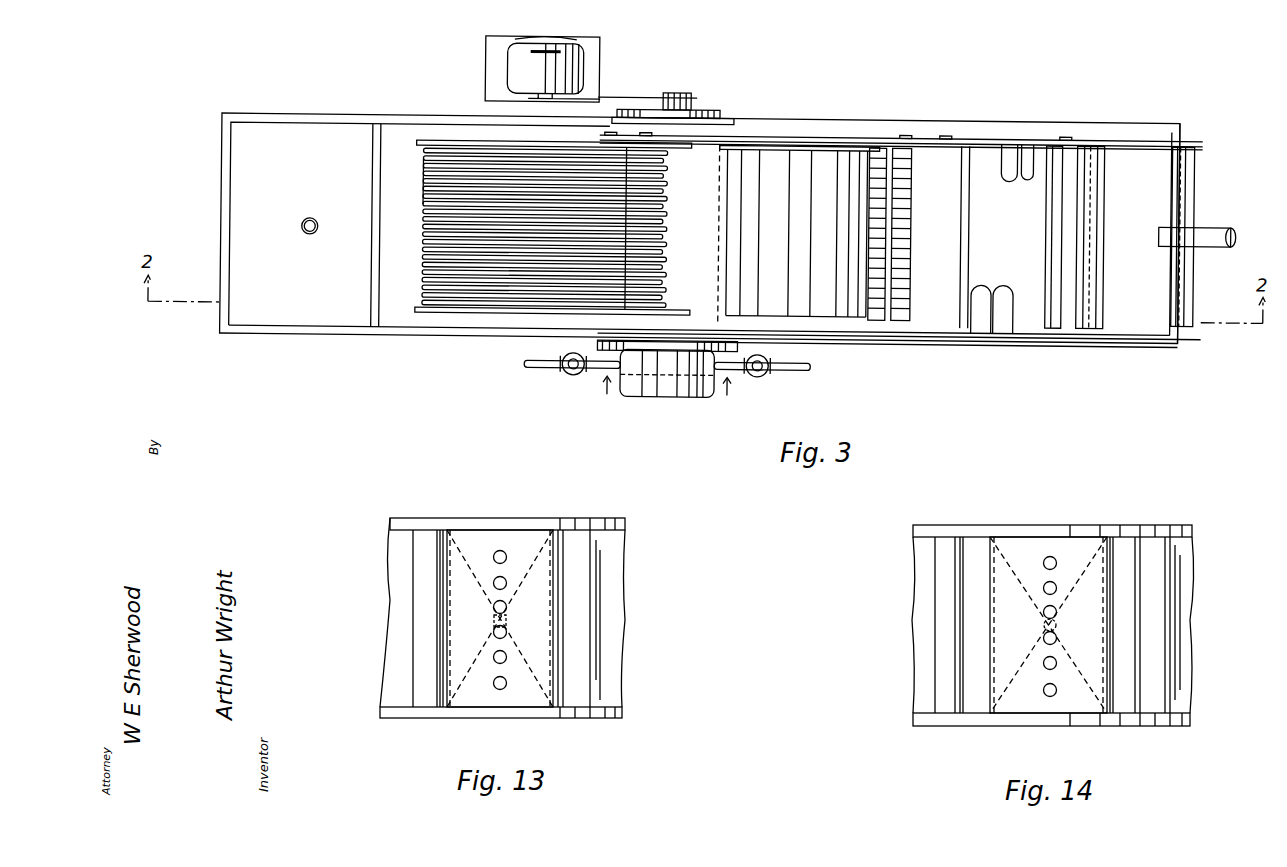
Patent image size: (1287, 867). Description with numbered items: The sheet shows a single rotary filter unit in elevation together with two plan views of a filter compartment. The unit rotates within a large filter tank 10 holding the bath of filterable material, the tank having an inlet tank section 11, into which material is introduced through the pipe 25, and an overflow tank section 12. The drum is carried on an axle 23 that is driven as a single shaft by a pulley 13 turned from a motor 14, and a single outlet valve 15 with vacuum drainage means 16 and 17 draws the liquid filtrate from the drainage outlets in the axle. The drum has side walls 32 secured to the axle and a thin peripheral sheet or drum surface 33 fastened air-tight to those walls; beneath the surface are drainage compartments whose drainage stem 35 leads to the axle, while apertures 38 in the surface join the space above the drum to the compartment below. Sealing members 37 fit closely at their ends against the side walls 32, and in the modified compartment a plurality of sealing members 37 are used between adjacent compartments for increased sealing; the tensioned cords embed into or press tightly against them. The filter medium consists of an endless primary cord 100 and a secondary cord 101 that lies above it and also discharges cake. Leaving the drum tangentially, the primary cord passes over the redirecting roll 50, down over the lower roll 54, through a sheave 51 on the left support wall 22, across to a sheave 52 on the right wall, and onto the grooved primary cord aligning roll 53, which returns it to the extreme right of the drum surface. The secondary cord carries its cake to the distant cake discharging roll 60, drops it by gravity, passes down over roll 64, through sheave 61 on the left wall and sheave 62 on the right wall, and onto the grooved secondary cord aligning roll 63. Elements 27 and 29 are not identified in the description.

In FIG. 3, the filter tank 10 is at (405, 330).
In FIG. 3, the inlet tank section 11 is at (1110, 128).
In FIG. 3, the overflow tank section 12 is at (300, 328).
In FIG. 3, the pulley 13 is at (690, 104).
In FIG. 3, the motor 14 is at (500, 67).
In FIG. 3, the outlet valve 15 is at (640, 385).
In FIG. 3, the vacuum drainage means 16 is at (550, 368).
In FIG. 3, the vacuum drainage means 17 is at (793, 366).
In FIG. 3, the spaced supports 22 is at (735, 130).
In FIG. 3, the axle 23 is at (670, 88).
In FIG. 3, the pipe 25 is at (1205, 218).
In FIG. 3, the partition 27 is at (971, 222).
In FIG. 3, the drain opening 29 is at (306, 233).
In FIG. 3, the side walls 32 is at (466, 311).
In FIG. 13, the side walls 32 is at (500, 523).
In FIG. 14, the side walls 32 is at (1002, 527).
In FIG. 13, the drum surface 33 is at (470, 538).
In FIG. 14, the drum surface 33 is at (1070, 548).
In FIG. 13, the drainage stem 35 is at (507, 620).
In FIG. 14, the drainage stem 35 is at (1057, 630).
In FIG. 3, the sealing members 37 is at (830, 200).
In FIG. 13, the sealing members 37 is at (418, 622).
In FIG. 14, the sealing members 37 is at (1122, 550).
In FIG. 13, the apertures 38 is at (505, 556).
In FIG. 14, the apertures 38 is at (1055, 692).
In FIG. 3, the redirecting roll 50 is at (1097, 272).
In FIG. 3, the sheave 51 is at (1010, 170).
In FIG. 3, the sheave 52 is at (983, 280).
In FIG. 3, the primary cord aligning roll 53 is at (876, 318).
In FIG. 3, the lower roll 54 is at (1054, 322).
In FIG. 3, the cake discharging roll 60 is at (1190, 172).
In FIG. 3, the sheave 61 is at (1028, 172).
In FIG. 3, the sheave 62 is at (1005, 282).
In FIG. 3, the secondary cord aligning roll 63 is at (905, 318).
In FIG. 3, the roll 64 is at (1086, 322).
In FIG. 3, the primary filter medium cord 100 is at (424, 211).
In FIG. 3, the secondary cord 101 is at (424, 232).